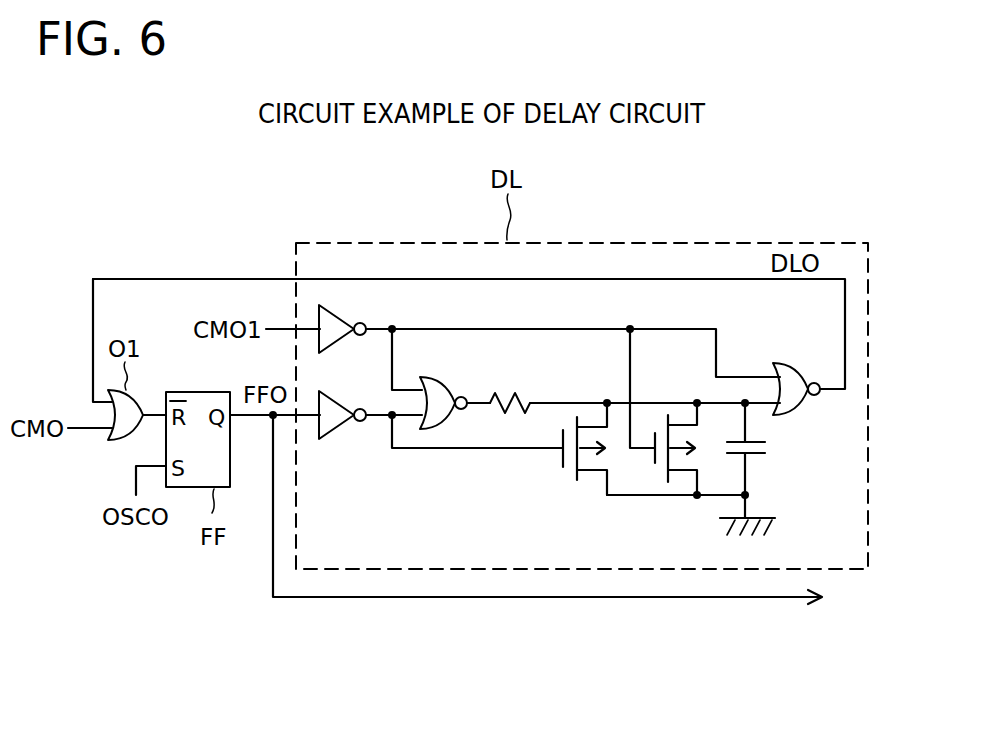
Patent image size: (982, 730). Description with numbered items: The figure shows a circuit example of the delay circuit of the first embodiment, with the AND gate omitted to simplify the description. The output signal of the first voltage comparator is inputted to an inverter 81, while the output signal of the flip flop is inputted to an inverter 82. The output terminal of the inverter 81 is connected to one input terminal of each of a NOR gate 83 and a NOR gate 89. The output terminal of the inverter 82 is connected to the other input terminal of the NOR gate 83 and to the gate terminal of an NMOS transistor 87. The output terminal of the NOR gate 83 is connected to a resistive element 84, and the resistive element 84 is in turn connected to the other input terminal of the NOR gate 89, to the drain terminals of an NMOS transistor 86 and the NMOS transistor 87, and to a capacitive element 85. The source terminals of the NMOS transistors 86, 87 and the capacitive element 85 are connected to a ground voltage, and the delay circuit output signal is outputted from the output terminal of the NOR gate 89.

The inverter 81 is at (336, 310).
The inverter 82 is at (336, 396).
The NOR gate 83 is at (440, 383).
The resistive element 84 is at (513, 393).
The capacitive element 85 is at (766, 452).
The NMOS transistor 86 is at (680, 477).
The NMOS transistor 87 is at (590, 477).
The NOR gate 89 is at (780, 365).